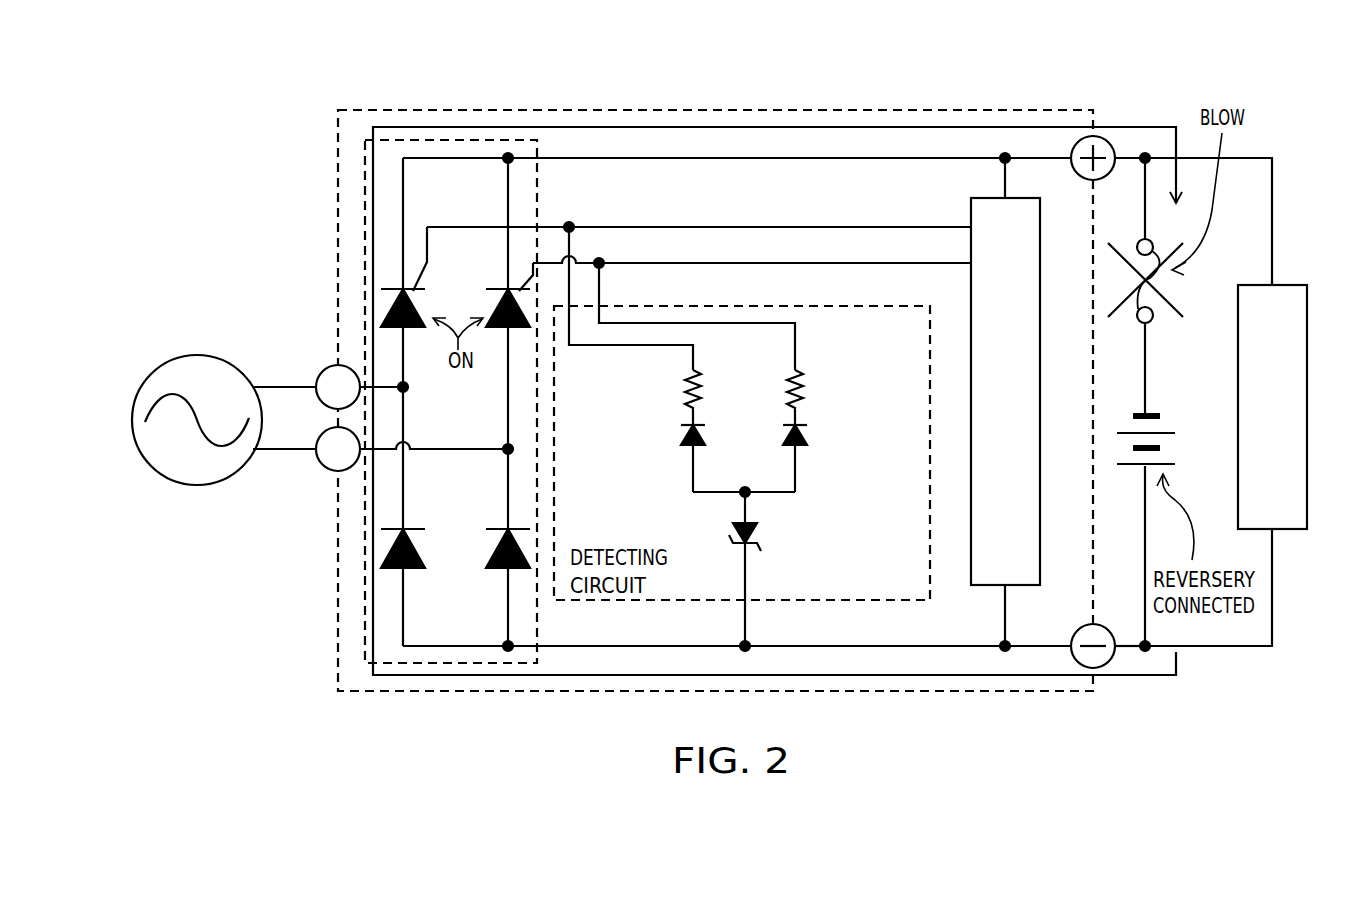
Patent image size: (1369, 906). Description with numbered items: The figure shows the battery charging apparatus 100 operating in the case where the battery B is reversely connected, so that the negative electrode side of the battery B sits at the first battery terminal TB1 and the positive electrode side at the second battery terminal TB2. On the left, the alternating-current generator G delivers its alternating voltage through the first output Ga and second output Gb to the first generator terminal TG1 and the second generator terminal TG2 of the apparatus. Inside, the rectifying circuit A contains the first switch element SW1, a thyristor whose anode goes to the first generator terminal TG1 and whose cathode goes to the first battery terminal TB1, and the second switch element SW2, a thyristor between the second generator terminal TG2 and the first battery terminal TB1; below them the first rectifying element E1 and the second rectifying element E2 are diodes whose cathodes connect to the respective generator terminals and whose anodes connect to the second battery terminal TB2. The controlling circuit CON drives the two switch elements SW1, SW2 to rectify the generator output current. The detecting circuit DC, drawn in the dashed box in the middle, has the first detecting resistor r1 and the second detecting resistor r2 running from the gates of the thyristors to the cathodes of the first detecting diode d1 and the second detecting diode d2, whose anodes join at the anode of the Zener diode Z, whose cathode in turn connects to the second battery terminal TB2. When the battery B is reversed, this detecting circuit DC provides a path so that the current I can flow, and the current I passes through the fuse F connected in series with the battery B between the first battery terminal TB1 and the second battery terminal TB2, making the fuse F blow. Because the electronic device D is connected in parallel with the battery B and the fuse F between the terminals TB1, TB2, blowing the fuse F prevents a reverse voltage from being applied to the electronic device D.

The battery charging apparatus 100 is at (707, 109).
The current I is at (808, 126).
The rectifying circuit A is at (450, 140).
The alternating-current generator G is at (197, 354).
The first output Ga is at (254, 385).
The second output Gb is at (253, 452).
The first generator terminal TG1 is at (322, 371).
The second generator terminal TG2 is at (322, 465).
The first switch element SW1 is at (388, 307).
The second switch element SW2 is at (497, 306).
The first rectifying element E1 is at (388, 552).
The second rectifying element E2 is at (496, 553).
The first detecting resistor r1 is at (688, 390).
The second detecting resistor r2 is at (800, 390).
The first detecting diode d1 is at (681, 435).
The second detecting diode d2 is at (805, 437).
The Zener diode Z is at (757, 531).
The detecting circuit DC is at (808, 602).
The controlling circuit CON is at (1030, 197).
The first battery terminal TB1 is at (1097, 136).
The second battery terminal TB2 is at (1110, 662).
The fuse F is at (1158, 278).
The battery B is at (1162, 416).
The electronic device D is at (1308, 407).